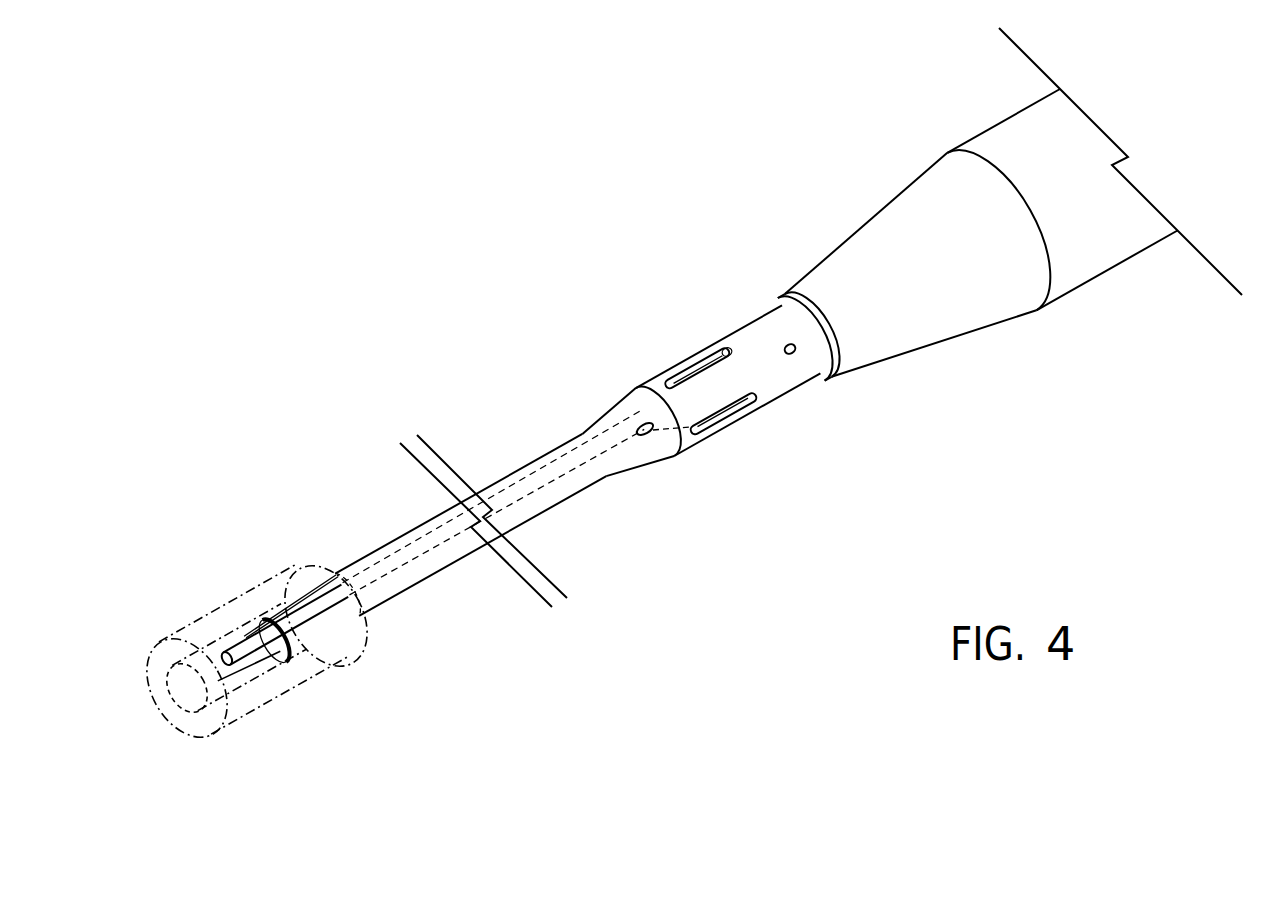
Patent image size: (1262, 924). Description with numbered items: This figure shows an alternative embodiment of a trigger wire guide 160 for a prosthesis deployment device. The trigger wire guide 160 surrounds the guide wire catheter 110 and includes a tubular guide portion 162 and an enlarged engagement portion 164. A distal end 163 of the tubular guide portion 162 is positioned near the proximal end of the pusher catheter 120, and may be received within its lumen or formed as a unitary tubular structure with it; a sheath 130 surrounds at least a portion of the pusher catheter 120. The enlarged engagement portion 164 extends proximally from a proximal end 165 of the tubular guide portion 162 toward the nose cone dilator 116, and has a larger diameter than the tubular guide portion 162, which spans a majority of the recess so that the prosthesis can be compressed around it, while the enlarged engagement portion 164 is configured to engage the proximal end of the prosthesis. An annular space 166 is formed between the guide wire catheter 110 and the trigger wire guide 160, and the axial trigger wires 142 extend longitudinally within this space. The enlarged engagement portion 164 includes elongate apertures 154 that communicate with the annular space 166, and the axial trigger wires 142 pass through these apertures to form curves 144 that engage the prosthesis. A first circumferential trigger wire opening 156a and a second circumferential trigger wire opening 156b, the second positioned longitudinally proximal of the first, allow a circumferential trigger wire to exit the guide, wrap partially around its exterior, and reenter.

The guide wire catheter 110 is at (247, 671).
The nose cone dilator 116 is at (930, 348).
The pusher catheter 120 is at (163, 688).
The sheath 130 is at (231, 738).
The axial trigger wires 142 is at (280, 667).
The curves 144 is at (690, 355).
The elongate apertures 154 is at (724, 352).
The first circumferential trigger wire opening 156a is at (643, 437).
The second circumferential trigger wire opening 156b is at (791, 356).
The trigger wire guide 160 is at (392, 537).
The tubular guide portion 162 is at (413, 597).
The distal end of the tubular guide portion 163 is at (263, 627).
The enlarged engagement portion 164 is at (703, 447).
The proximal end of the tubular guide portion 165 is at (582, 432).
The annular space 166 is at (252, 636).